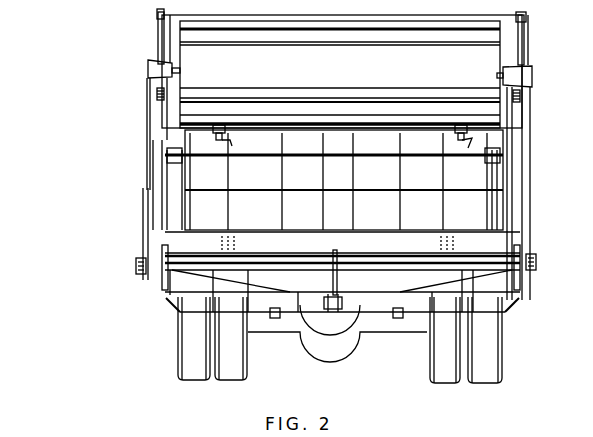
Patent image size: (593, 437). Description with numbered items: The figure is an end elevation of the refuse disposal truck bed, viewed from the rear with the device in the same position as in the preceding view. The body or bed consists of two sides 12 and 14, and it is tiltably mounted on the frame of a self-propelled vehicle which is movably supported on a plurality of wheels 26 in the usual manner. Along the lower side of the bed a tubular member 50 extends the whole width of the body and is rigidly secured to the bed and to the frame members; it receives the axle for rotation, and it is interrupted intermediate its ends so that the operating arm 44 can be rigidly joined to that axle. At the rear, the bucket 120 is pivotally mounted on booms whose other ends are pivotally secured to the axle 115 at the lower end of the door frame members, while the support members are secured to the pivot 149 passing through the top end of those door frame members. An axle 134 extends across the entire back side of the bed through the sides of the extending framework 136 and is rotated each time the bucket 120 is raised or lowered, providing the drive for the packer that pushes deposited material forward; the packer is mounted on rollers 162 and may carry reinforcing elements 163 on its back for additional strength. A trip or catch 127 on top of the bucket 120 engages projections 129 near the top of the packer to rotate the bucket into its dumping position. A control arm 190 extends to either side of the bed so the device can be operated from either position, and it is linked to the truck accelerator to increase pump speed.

The side 12 is at (160, 44).
The side 14 is at (524, 46).
The wheels 26 is at (182, 366).
The operating arm 44 is at (337, 283).
The tubular member 50 is at (388, 245).
The axle 115 is at (136, 266).
The bucket 120 is at (346, 70).
The trip or catch 127 is at (219, 125).
The projections 129 is at (462, 148).
The axle 134 is at (436, 152).
The extending framework 136 is at (520, 120).
The pivot 149 is at (157, 14).
The rollers 162 is at (236, 243).
The reinforcing elements 163 is at (350, 177).
The control arm 190 is at (168, 305).